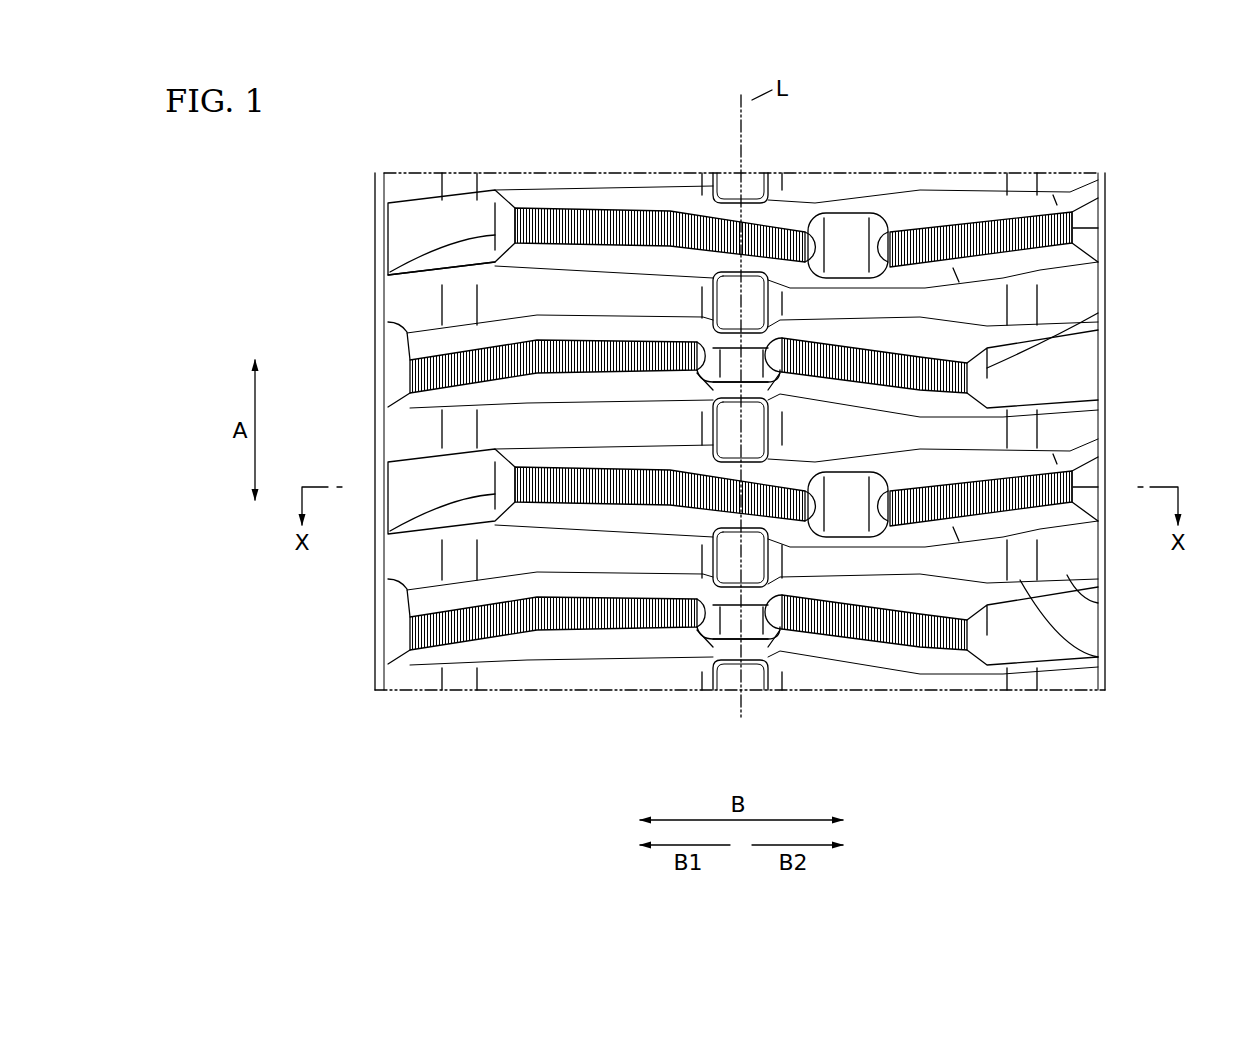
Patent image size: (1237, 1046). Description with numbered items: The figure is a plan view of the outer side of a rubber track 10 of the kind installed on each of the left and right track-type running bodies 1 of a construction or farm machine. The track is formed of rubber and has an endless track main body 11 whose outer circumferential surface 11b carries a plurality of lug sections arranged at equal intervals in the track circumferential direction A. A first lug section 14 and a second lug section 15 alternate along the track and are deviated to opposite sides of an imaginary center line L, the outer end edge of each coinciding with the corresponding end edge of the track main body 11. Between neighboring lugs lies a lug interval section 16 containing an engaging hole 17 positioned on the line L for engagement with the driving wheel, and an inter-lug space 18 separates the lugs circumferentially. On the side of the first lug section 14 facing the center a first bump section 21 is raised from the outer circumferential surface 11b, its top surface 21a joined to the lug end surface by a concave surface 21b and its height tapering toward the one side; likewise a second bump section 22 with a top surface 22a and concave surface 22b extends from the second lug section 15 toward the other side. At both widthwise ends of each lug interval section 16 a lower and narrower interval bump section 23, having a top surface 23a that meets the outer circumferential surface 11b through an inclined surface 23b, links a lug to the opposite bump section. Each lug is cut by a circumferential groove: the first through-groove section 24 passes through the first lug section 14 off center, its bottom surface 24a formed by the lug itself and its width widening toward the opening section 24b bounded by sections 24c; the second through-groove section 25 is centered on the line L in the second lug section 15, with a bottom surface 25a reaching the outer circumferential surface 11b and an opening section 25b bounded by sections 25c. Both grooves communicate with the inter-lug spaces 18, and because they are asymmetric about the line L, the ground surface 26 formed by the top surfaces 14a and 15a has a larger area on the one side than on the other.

The track-type running body 1 is at (1184, 141).
The rubber track 10 is at (372, 154).
The track main body 11 is at (372, 188).
The outer circumferential surface 11b is at (898, 187).
The first lug section 14 is at (1070, 197).
The top surface of first lug section 14a is at (1075, 233).
The second lug section 15 is at (412, 337).
The top surface of second lug section 15a is at (412, 375).
The lug interval section 16 is at (393, 432).
The engaging hole 17 is at (730, 178).
The inter-lug space 18 is at (562, 298).
The first bump section 21 is at (398, 222).
The top surface of first bump section 21a is at (402, 245).
The concave surface of first bump section 21b is at (395, 266).
The second bump section 22 is at (1075, 350).
The top surface of second bump section 22a is at (1080, 380).
The concave surface of second bump section 22b is at (1098, 313).
The interval bump section 23 is at (392, 552).
The top surface of interval bump section 23a is at (455, 560).
The inclined surface 23b is at (470, 577).
The first through-groove section 24 is at (833, 233).
The bottom surface of first through-groove section 24a is at (852, 222).
The opening section of first through-groove section 24b is at (875, 222).
The section defining opening section 24c is at (815, 237).
The second through-groove section 25 is at (711, 353).
The bottom surface of second through-groove section 25a is at (729, 633).
The opening section of second through-groove section 25b is at (710, 640).
The section defining opening section 25c is at (707, 633).
The ground surface 26 is at (553, 216).